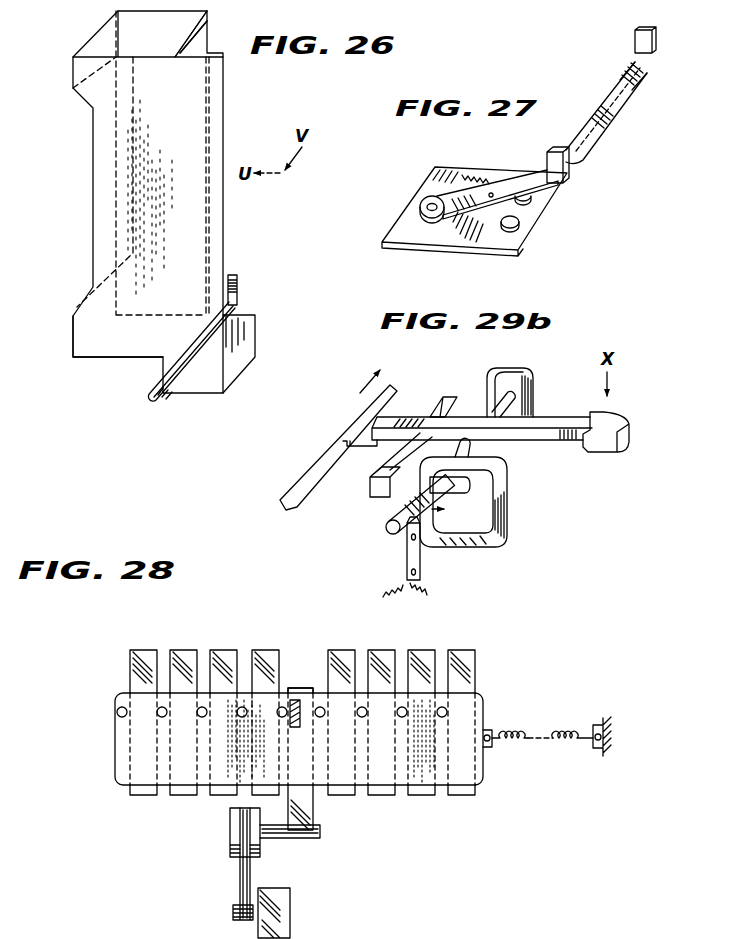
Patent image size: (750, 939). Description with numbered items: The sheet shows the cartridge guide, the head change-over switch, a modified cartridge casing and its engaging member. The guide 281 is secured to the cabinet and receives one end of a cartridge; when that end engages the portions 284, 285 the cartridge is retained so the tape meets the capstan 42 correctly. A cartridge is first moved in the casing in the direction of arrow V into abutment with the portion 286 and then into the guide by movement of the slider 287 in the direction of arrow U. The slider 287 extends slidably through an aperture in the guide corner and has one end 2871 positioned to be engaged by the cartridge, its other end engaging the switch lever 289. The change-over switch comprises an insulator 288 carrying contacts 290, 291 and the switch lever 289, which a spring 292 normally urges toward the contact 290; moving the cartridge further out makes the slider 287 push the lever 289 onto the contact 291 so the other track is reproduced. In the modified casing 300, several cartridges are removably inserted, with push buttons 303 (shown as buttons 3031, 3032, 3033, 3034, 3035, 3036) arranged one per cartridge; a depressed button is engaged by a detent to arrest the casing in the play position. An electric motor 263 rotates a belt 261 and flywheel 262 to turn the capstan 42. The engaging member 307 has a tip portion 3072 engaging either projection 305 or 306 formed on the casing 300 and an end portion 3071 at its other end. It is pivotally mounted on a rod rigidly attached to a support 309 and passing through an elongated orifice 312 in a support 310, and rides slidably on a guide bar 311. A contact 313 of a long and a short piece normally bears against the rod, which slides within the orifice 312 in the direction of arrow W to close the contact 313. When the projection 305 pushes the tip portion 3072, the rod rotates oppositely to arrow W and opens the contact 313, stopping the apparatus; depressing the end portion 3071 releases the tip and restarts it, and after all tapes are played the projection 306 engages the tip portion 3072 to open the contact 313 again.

In FIG. 26, the guide 281 is at (95, 42).
In FIG. 26, the portion of the guide 284 is at (74, 338).
In FIG. 26, the portion of the guide 285 is at (64, 24).
In FIG. 26, the portion of the guide 286 is at (226, 98).
In FIG. 26, the slider 287 is at (153, 393).
In FIG. 27, the slider 287 is at (587, 150).
In FIG. 26, the one end of the slider 2871 is at (240, 279).
In FIG. 27, the one end of the slider 2871 is at (652, 50).
In FIG. 27, the insulator 288 is at (423, 253).
In FIG. 27, the switch lever 289 is at (453, 200).
In FIG. 27, the contact 290 is at (517, 192).
In FIG. 27, the contact 291 is at (517, 227).
In FIG. 27, the spring 292 is at (485, 176).
In FIG. 29B, the casing 300 is at (340, 435).
In FIG. 28, the casing 300 is at (483, 772).
In FIG. 28, the push buttons 303 is at (378, 656).
In FIG. 29B, the projection 305 is at (362, 457).
In FIG. 28, the projection 305 is at (297, 688).
In FIG. 28, the projection 306 is at (268, 641).
In FIG. 28, the push button 3031 is at (443, 720).
In FIG. 28, the push button 3032 is at (402, 720).
In FIG. 28, the push button 3033 is at (363, 720).
In FIG. 28, the push button 3034 is at (322, 717).
In FIG. 28, the push button 3035 is at (280, 716).
In FIG. 28, the push button 3036 is at (240, 716).
In FIG. 29B, the engaging member 307 is at (562, 445).
In FIG. 29B, the end portion of the engaging member 3071 is at (623, 412).
In FIG. 29B, the tip portion of the engaging member 3072 is at (402, 418).
In FIG. 29B, the support 309 is at (532, 368).
In FIG. 29B, the support 310 is at (492, 507).
In FIG. 29B, the guide bar 311 is at (377, 492).
In FIG. 29B, the elongated orifice 312 is at (473, 488).
In FIG. 29B, the contact 313 is at (403, 560).
In FIG. 28, the capstan 42 is at (314, 840).
In FIG. 28, the belt 261 is at (250, 873).
In FIG. 28, the flywheel 262 is at (232, 843).
In FIG. 28, the electric motor 263 is at (291, 908).